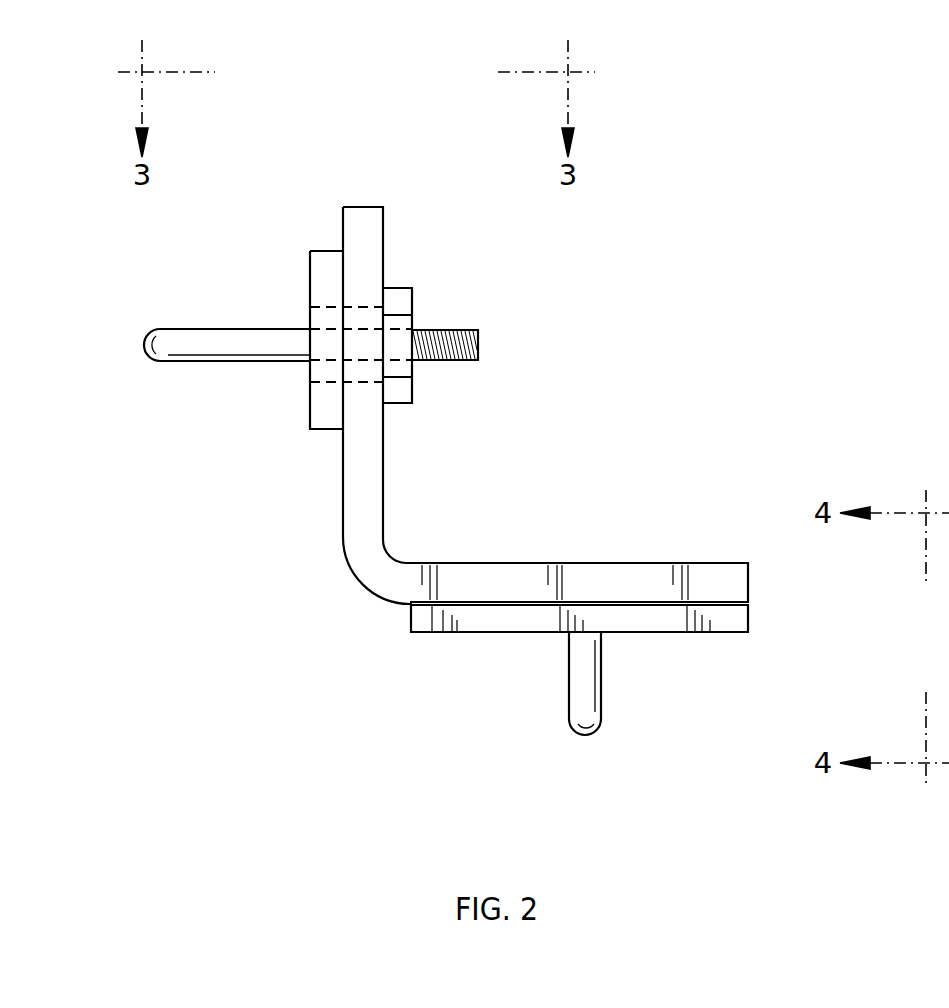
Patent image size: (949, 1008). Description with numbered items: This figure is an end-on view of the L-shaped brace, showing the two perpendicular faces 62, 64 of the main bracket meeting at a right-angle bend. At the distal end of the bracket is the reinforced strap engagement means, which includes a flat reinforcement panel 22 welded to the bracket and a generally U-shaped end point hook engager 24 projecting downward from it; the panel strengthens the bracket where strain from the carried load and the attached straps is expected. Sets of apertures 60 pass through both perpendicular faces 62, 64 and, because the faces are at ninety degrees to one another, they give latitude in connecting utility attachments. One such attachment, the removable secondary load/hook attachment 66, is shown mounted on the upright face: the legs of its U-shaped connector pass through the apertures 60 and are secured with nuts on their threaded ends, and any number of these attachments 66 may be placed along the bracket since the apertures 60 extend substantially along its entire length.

The flat reinforcement panel 22 is at (456, 633).
The U-shaped end point hook engager 24 is at (588, 682).
The apertures 60 is at (355, 305).
The perpendicular face 62 is at (383, 474).
The perpendicular face 64 is at (634, 563).
The secondary load/hook attachment 66 is at (282, 293).